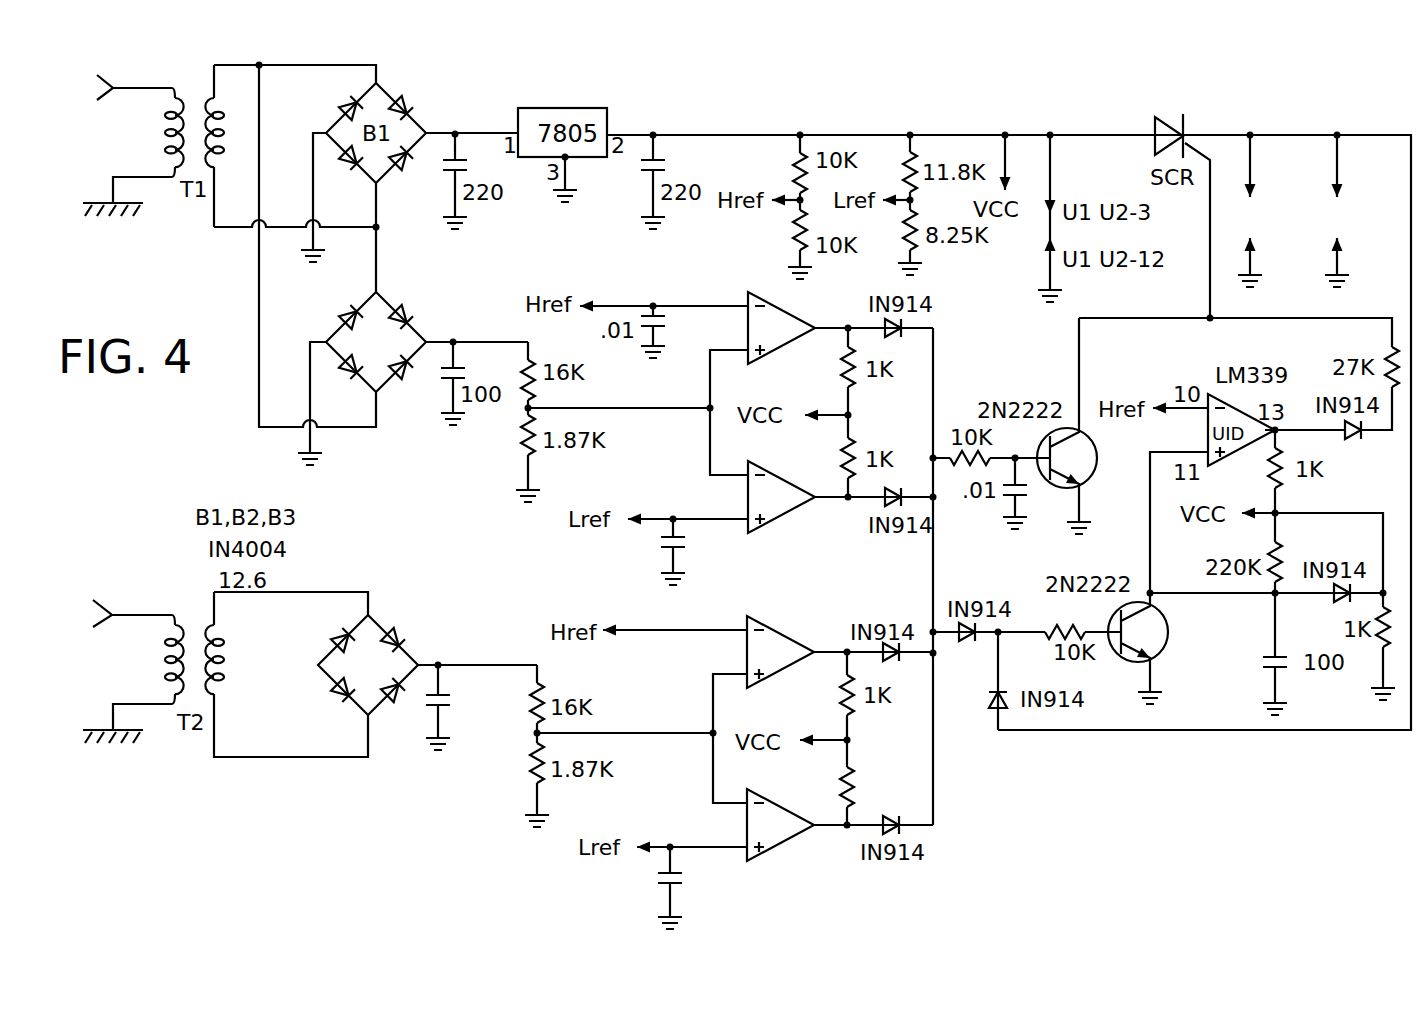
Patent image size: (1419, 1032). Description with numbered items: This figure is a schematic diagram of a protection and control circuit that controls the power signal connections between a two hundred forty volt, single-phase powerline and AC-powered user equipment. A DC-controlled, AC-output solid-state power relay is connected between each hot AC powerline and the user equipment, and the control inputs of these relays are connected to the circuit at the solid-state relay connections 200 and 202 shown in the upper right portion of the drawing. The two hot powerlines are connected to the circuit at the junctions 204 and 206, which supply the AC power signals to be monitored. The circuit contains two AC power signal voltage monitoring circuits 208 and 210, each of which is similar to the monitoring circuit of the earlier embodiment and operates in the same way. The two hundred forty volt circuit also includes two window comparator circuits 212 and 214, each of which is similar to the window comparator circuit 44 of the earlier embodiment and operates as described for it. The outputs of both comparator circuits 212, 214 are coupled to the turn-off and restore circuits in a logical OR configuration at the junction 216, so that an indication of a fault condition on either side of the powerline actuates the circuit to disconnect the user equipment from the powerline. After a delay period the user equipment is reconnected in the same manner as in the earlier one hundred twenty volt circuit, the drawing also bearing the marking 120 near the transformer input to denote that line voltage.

The window comparator circuit 44 is at (378, 778).
The AC line voltage input 120 is at (148, 601).
The solid-state power relay connection 200 is at (1255, 208).
The solid-state power relay connection 202 is at (1342, 208).
The junction 204 is at (140, 89).
The junction 206 is at (132, 613).
The AC power signal voltage monitoring circuit 208 is at (412, 435).
The AC power signal voltage monitoring circuit 210 is at (438, 620).
The window comparator circuit 212 is at (700, 397).
The window comparator circuit 214 is at (677, 703).
The junction 216 is at (936, 485).